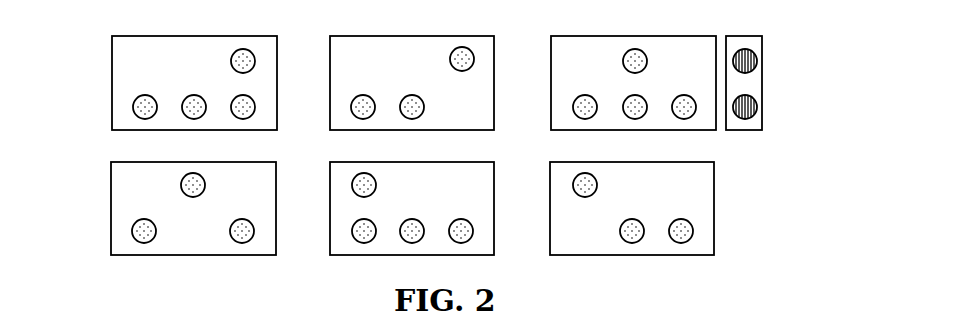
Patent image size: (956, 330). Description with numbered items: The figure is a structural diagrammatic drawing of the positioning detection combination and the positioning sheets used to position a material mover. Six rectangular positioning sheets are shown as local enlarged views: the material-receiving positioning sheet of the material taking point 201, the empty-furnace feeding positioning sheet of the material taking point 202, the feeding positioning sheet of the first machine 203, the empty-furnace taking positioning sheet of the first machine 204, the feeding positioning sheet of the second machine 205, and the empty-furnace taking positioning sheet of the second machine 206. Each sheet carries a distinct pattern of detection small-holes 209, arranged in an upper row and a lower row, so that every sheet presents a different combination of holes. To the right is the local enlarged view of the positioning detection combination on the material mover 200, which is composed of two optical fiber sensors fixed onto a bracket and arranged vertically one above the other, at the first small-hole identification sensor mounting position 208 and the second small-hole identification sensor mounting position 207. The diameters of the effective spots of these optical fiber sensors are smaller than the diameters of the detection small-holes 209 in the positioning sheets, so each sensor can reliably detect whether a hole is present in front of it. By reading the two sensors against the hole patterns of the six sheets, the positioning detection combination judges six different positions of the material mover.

The local enlarged view of positioning detection combination on material mover 200 is at (767, 112).
The local enlarged view of material-receiving positioning sheet of material taking p 201 is at (169, 83).
The local enlarged view of empty-furnace feeding positioning sheet of material takin 202 is at (330, 65).
The local enlarged view of feeding positioning sheet of first machine 203 is at (551, 65).
The local enlarged view of empty-furnace taking positioning sheet of first machine 204 is at (111, 192).
The local enlarged view of feeding positioning sheet of second machine 205 is at (330, 192).
The local enlarged view of empty-furnace taking positioning sheet of second machine 206 is at (550, 192).
The first small-hole identification sensor mounting position 207 is at (745, 118).
The second small-hole identification sensor mounting position 208 is at (752, 54).
The detection small-hole 209 is at (133, 108).